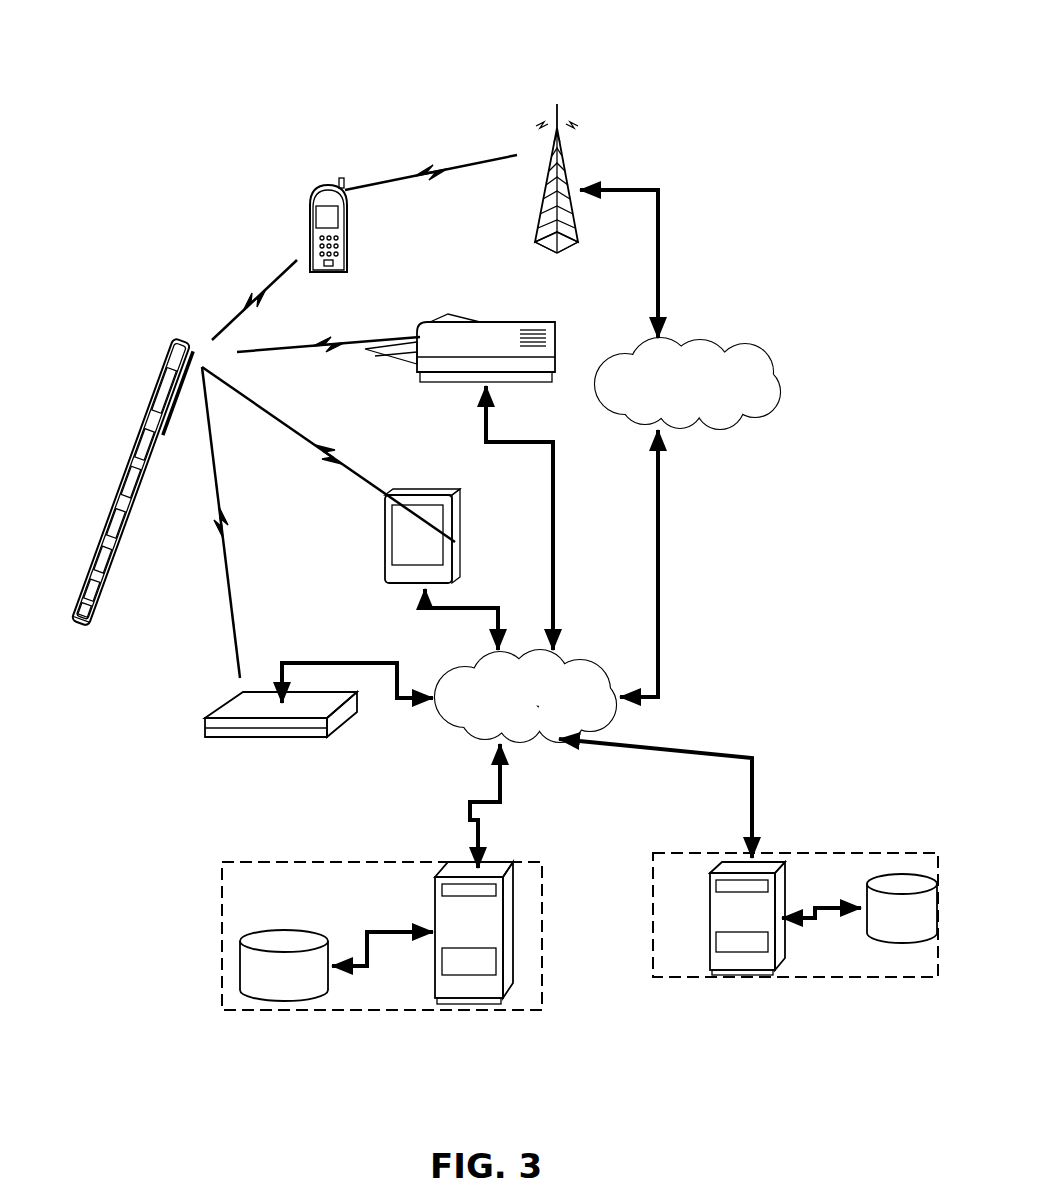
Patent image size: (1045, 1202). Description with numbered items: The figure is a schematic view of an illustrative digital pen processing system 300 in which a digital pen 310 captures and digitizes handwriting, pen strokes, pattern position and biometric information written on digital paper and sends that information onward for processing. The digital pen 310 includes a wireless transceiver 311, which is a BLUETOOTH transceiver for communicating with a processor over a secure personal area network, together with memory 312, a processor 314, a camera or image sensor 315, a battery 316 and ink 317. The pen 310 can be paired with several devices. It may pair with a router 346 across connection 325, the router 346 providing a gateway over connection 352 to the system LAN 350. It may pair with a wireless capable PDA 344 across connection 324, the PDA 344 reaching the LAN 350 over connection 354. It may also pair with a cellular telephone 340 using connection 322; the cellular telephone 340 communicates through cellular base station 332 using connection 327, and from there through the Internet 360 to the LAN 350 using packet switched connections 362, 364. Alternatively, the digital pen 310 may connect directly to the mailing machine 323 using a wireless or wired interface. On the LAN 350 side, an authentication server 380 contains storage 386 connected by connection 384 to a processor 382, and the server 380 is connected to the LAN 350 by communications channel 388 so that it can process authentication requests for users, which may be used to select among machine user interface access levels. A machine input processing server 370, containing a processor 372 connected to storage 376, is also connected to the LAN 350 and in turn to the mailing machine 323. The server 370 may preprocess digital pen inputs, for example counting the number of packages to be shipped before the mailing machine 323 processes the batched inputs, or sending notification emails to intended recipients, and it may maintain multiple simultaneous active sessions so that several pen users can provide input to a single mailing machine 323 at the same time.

The digital pen processing system 300 is at (146, 70).
The digital pen 310 is at (150, 342).
The wireless transceiver 311 is at (160, 382).
The memory 312 is at (178, 402).
The processor 314 is at (127, 530).
The camera or image sensor 315 is at (98, 597).
The battery 316 is at (130, 458).
The ink 317 is at (105, 560).
The connection 322 is at (254, 296).
The mailing machine 323 is at (328, 367).
The connection 324 is at (328, 454).
The connection 325 is at (236, 522).
The connection 327 is at (431, 168).
The cellular base station 332 is at (581, 178).
The cellular telephone 340 is at (322, 215).
The wireless capable PDA 344 is at (450, 536).
The router 346 is at (193, 735).
The LAN 350 is at (525, 696).
The connection 352 is at (357, 668).
The connection 354 is at (461, 619).
The Internet 360 is at (690, 391).
The packet switched connection 362 is at (621, 264).
The packet switched connection 364 is at (675, 563).
The machine input processing server 370 is at (771, 915).
The processor 372 is at (721, 918).
The storage 376 is at (902, 925).
The authentication server 380 is at (358, 936).
The processor 382 is at (454, 933).
The connection 384 is at (382, 954).
The storage 386 is at (285, 951).
The communications channel 388 is at (460, 806).